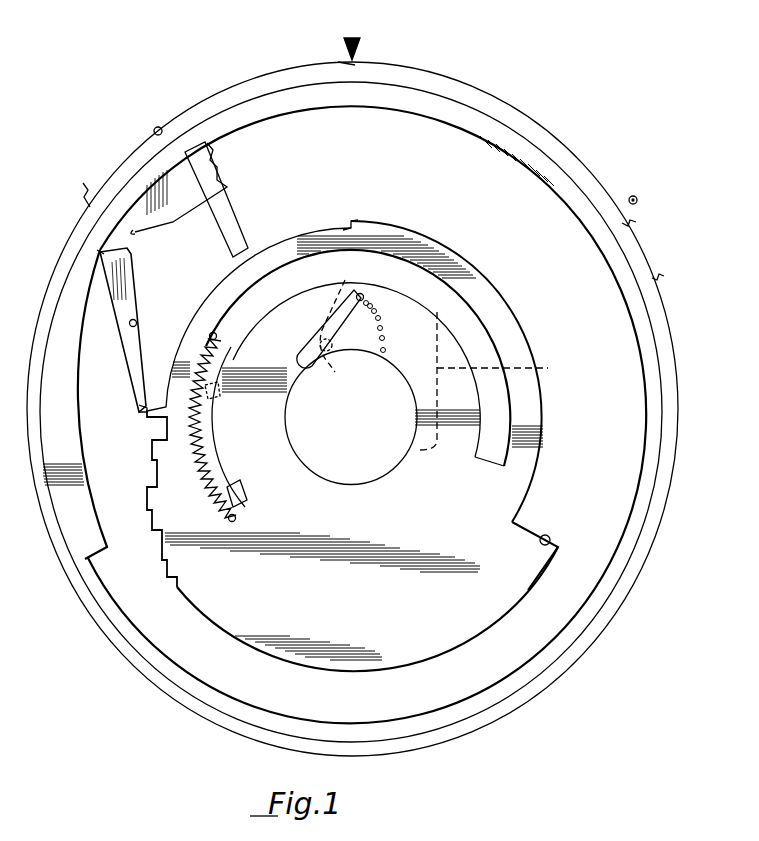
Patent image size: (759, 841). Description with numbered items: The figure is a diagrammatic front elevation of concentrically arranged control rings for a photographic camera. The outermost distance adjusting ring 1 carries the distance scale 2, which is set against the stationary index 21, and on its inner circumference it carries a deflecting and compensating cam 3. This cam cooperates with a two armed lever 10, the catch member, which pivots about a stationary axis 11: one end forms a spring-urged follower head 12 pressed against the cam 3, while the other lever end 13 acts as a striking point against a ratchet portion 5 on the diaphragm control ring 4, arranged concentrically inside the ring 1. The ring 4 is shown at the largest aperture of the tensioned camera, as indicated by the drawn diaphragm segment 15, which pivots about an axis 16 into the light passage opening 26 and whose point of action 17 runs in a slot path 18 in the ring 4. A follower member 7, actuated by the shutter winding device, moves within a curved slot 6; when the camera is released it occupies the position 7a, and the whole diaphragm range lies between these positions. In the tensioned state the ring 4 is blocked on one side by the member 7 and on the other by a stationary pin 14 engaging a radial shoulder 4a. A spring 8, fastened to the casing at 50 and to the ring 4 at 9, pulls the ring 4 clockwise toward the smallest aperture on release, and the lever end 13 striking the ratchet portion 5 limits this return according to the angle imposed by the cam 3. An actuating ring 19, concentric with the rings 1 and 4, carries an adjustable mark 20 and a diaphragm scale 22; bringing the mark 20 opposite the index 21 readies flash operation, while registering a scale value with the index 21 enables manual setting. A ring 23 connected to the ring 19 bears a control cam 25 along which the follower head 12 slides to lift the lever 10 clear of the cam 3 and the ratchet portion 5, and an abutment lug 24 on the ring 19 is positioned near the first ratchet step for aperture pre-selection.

The distance adjusting ring 1 is at (92, 582).
The distance scale 2 is at (244, 100).
The deflecting and compensating cam 3 is at (82, 462).
The diaphragm control ring 4 is at (205, 598).
The radial shoulder 4a is at (538, 518).
The ratchet portion 5 is at (150, 508).
The curved slot 6 is at (463, 302).
The follower member 7 is at (240, 494).
The released position of follower member 7a is at (219, 392).
The spring 8 is at (215, 452).
The spring attachment point on diaphragm control ring 9 is at (237, 518).
The two armed lever 10 is at (140, 356).
The stationary axis 11 is at (138, 320).
The follower head 12 is at (100, 252).
The lever end 13 is at (140, 408).
The stationary pin 14 is at (551, 537).
The diaphragm segment 15 is at (520, 372).
The axis 16 is at (333, 360).
The point of action 17 is at (361, 294).
The slot path 18 is at (326, 326).
The actuating ring 19 is at (173, 118).
The adjustable mark 20 is at (350, 62).
The stationary index 21 is at (356, 40).
The diaphragm scale 22 is at (478, 90).
The ring 23 is at (120, 158).
The abutment lug 24 is at (228, 226).
The control cam 25 is at (133, 230).
The light passage opening 26 is at (375, 440).
The casing attachment point of spring 50 is at (218, 336).